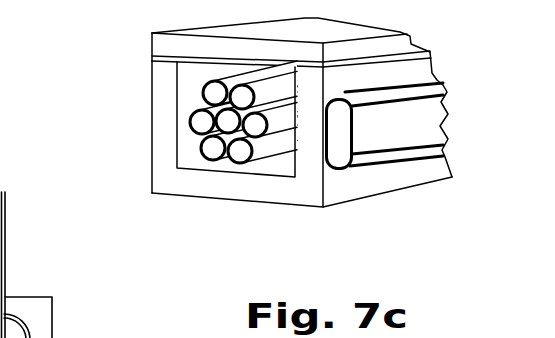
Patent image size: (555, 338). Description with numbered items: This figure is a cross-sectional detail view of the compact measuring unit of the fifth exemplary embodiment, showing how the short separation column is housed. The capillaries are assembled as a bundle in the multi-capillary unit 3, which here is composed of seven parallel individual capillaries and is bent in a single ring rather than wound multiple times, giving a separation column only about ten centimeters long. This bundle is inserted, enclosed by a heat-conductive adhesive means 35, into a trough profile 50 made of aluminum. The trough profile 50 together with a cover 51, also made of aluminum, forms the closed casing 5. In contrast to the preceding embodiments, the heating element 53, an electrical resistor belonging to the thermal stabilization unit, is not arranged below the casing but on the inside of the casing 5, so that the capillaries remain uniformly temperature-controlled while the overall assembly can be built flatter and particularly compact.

The casing 5 is at (236, 112).
The cover 51 is at (256, 57).
The trough profile 50 is at (82, 62).
The multi-capillary unit 3 is at (230, 120).
The heat-conductive adhesive means 35 is at (278, 172).
The heating element 53 is at (373, 130).